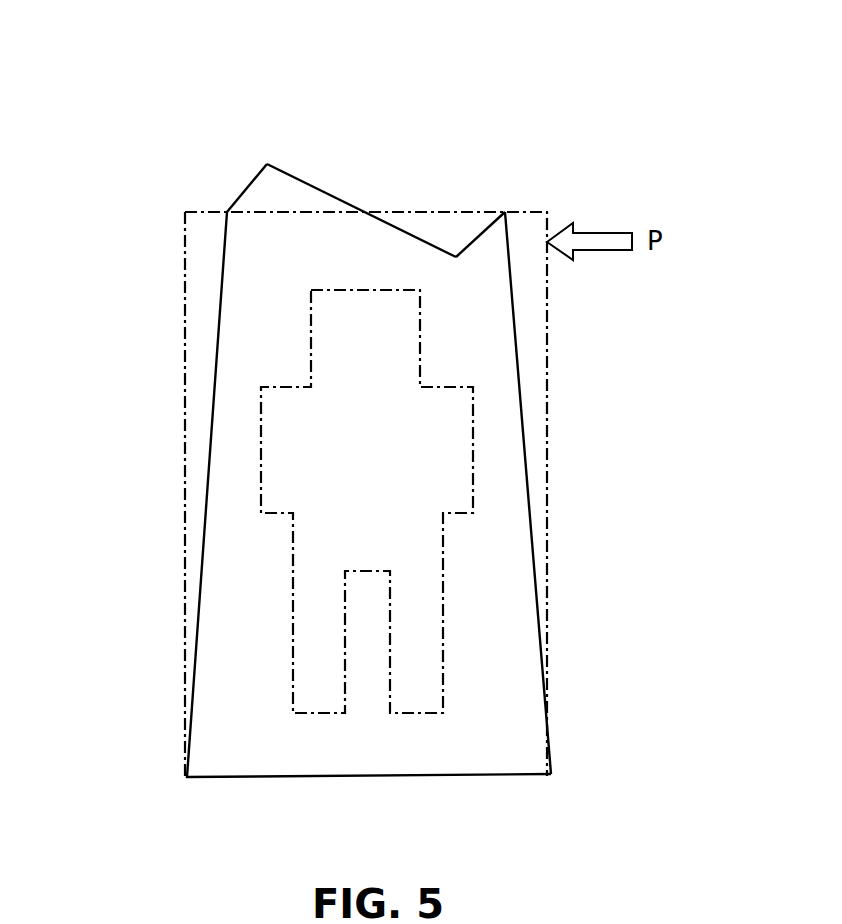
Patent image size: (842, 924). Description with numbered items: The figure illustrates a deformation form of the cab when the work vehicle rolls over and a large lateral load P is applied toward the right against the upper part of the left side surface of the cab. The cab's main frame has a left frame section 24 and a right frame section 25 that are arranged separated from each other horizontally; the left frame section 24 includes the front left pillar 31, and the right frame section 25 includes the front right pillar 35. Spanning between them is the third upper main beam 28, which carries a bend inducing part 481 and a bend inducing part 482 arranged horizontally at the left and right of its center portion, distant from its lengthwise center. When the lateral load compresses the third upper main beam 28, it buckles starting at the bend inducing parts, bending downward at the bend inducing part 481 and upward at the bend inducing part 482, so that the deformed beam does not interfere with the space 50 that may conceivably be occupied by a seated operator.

The left frame section 24 is at (533, 402).
The right frame section 25 is at (206, 407).
The third upper main beam 28 is at (333, 192).
The front left pillar 31 is at (515, 335).
The front right pillar 35 is at (217, 328).
The space 50 is at (262, 493).
The bend inducing part 481 is at (456, 252).
The bend inducing part 482 is at (267, 164).